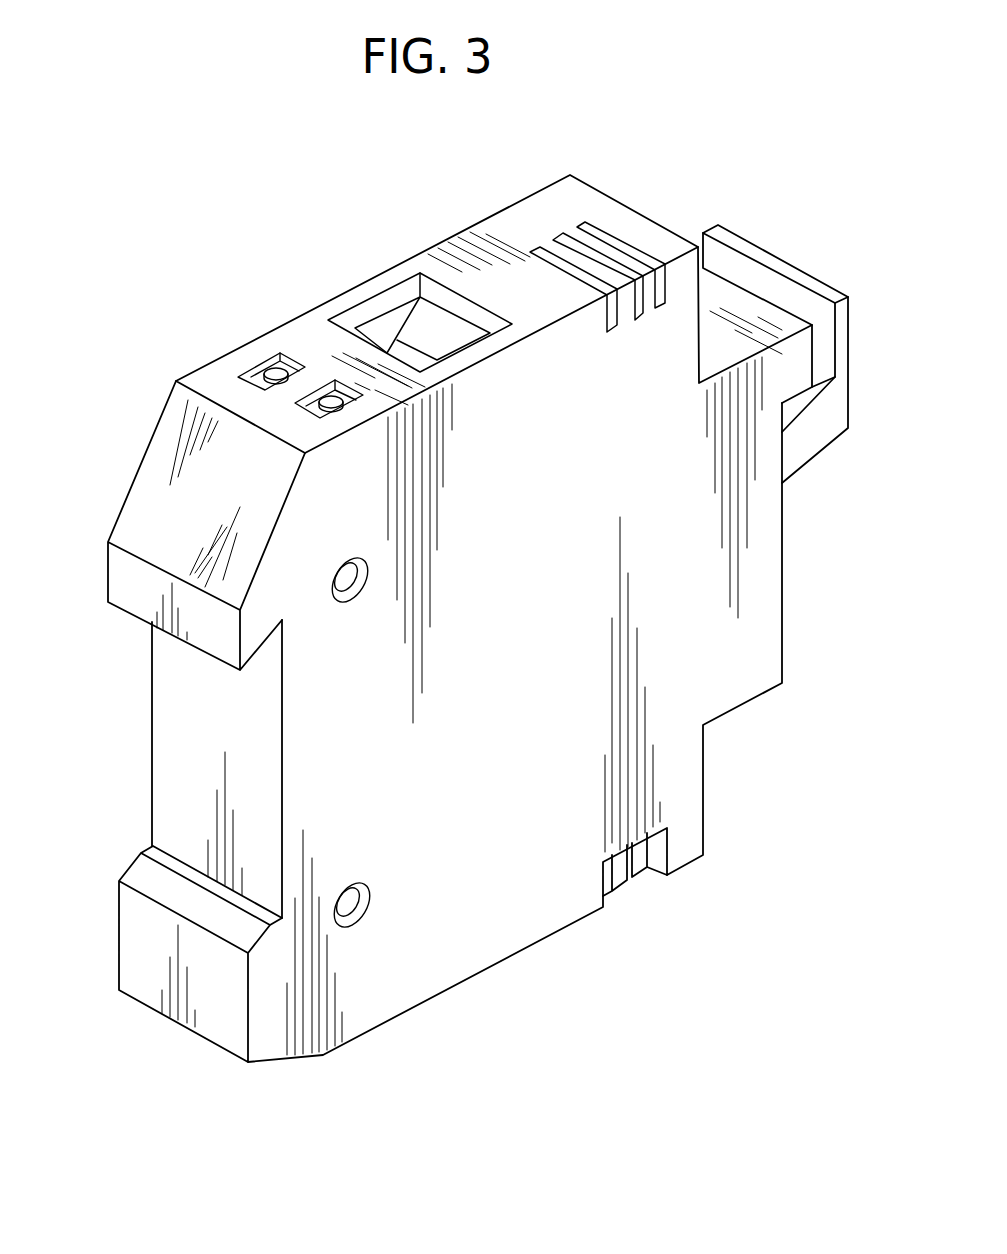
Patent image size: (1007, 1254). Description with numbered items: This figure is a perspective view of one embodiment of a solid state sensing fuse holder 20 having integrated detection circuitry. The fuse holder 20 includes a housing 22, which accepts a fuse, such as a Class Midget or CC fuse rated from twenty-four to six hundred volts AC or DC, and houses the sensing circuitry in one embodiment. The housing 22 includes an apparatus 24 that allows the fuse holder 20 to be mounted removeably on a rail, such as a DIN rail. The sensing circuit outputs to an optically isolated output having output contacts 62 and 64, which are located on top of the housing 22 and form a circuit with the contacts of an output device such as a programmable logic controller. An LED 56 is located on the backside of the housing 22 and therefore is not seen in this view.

The fuse holder 20 is at (317, 251).
The housing 22 is at (531, 661).
The apparatus 24 is at (180, 862).
The LED 56 is at (714, 283).
The output contact 62 is at (272, 371).
The output contact 64 is at (343, 400).